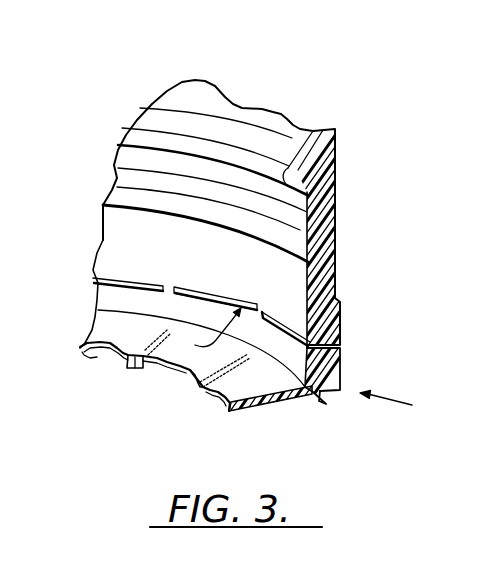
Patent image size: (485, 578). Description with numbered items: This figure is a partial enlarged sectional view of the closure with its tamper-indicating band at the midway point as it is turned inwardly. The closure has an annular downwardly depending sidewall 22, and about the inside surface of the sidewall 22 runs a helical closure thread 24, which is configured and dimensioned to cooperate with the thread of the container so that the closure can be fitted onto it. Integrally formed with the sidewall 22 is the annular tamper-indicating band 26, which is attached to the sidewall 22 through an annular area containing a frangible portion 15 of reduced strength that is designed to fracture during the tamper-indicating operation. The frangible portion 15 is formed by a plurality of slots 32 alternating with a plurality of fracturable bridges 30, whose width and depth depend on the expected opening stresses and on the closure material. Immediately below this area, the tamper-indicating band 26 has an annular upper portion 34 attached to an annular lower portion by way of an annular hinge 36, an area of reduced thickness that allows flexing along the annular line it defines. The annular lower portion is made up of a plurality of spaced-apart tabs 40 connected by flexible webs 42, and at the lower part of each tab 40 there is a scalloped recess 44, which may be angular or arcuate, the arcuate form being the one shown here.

The frangible portion 15 is at (206, 331).
The annular sidewall 22 is at (322, 294).
The closure thread 24 is at (300, 240).
The annular tamper-indicating band 26 is at (399, 406).
The fracturable bridges 30 is at (170, 282).
The slots 32 is at (222, 296).
The annular upper portion 34 is at (333, 371).
The annular hinge 36 is at (321, 404).
The tabs 40 is at (258, 413).
The flexible webs 42 is at (153, 363).
The scalloped recess 44 is at (97, 357).